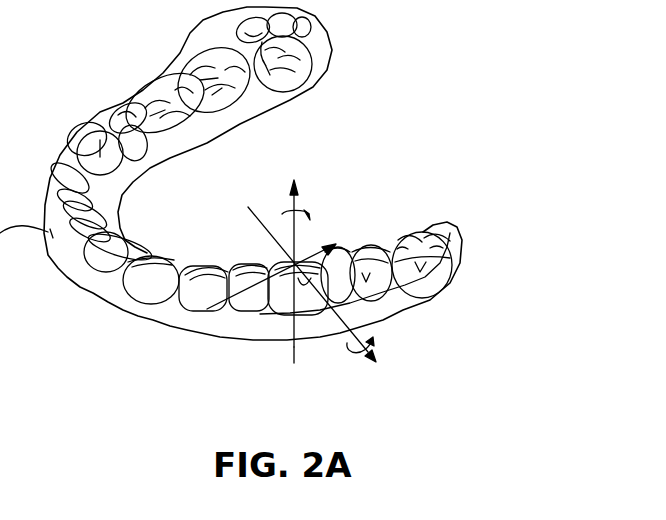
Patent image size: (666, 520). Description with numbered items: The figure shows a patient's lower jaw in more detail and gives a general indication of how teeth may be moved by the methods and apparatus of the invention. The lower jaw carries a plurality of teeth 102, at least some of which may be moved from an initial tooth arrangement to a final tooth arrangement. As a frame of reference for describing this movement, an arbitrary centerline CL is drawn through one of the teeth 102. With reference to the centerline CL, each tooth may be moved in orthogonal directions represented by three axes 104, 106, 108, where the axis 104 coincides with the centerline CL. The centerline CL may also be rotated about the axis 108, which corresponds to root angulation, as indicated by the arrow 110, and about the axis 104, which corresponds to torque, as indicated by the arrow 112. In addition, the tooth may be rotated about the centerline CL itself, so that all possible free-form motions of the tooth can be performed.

The teeth 102 is at (402, 242).
The axis 104 is at (294, 344).
The centerline CL is at (294, 363).
The axis 106 is at (258, 287).
The axis 108 is at (350, 317).
The arrow 110 is at (347, 343).
The arrow 112 is at (283, 208).